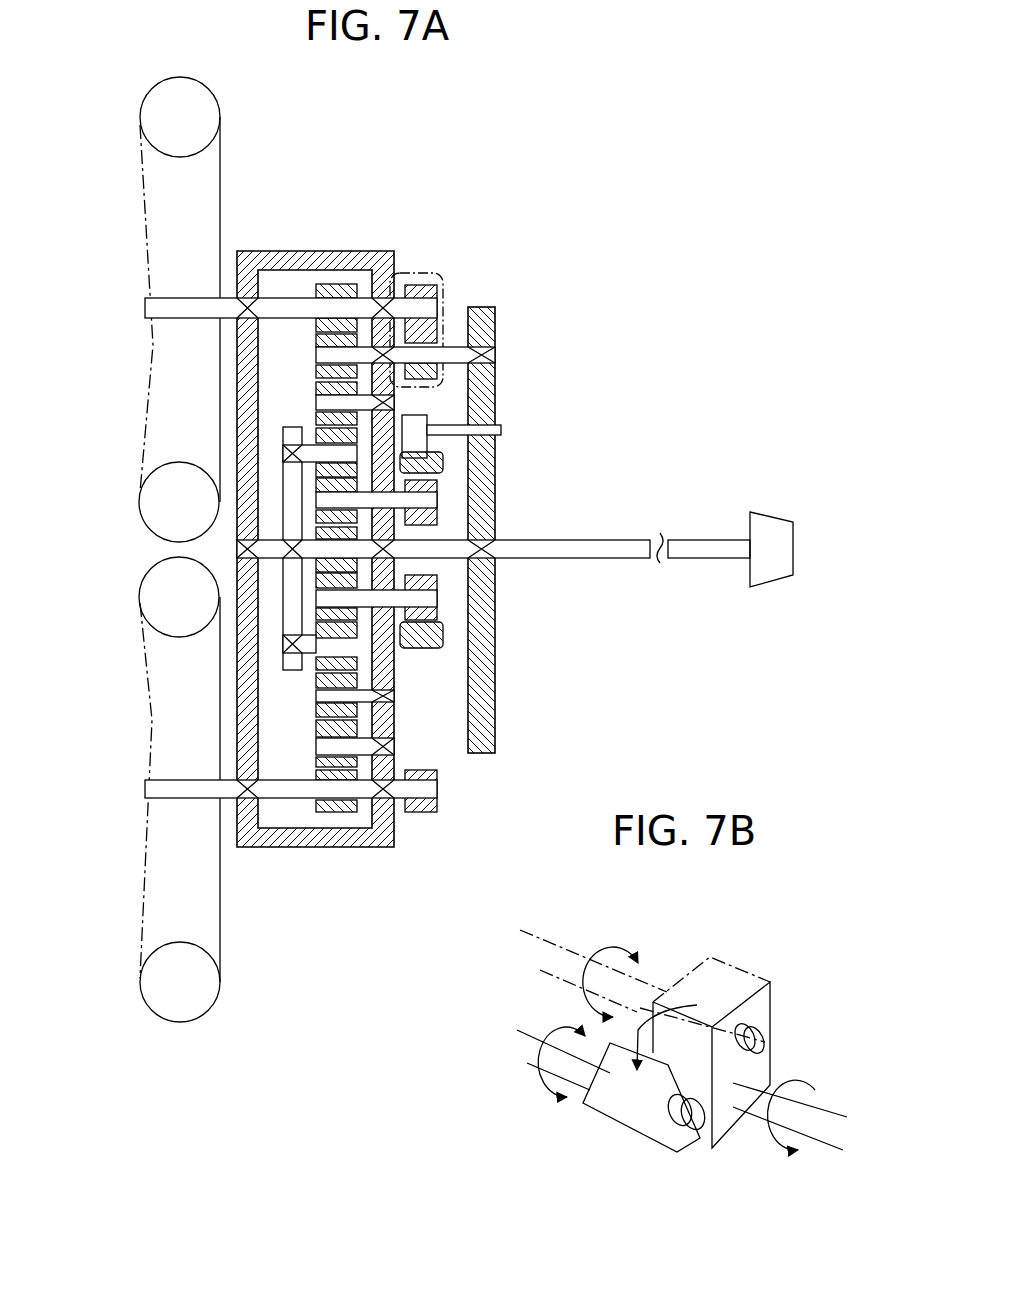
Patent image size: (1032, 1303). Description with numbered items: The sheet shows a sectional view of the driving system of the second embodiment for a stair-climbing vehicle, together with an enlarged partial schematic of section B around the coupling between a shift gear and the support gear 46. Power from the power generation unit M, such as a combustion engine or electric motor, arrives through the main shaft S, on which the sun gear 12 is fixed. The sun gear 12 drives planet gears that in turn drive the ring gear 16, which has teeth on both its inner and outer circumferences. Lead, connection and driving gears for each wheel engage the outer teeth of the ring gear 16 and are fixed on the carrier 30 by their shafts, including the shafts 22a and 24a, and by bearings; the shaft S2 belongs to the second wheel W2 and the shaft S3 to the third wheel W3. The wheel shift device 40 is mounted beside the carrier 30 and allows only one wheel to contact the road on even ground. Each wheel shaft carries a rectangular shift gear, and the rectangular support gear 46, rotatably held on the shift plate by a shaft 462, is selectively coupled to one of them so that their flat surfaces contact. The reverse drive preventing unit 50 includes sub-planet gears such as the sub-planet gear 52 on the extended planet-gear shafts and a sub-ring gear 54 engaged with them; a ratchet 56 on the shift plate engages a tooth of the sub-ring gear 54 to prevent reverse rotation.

In FIG. 7A, the second wheel W2 is at (160, 172).
In FIG. 7A, the third wheel W3 is at (158, 652).
In FIG. 7A, the carrier 30 is at (284, 246).
In FIG. 7A, the wheel shift device 40 is at (491, 305).
In FIG. 7A, the ring gear 16 is at (290, 486).
In FIG. 7A, the support gear 46 is at (443, 362).
In FIG. 7B, the support gear 46 is at (730, 1127).
In FIG. 7A, the ratchet 56 is at (413, 416).
In FIG. 7A, the reverse drive preventing unit 50 is at (449, 417).
In FIG. 7A, the sub-ring gear 54 is at (440, 453).
In FIG. 7A, the sub-planet gear 52 is at (440, 513).
In FIG. 7A, the shaft S2 is at (145, 307).
In FIG. 7B, the shaft S2 is at (560, 960).
In FIG. 7A, the shaft S3 is at (145, 789).
In FIG. 7A, the shaft 462 is at (449, 352).
In FIG. 7B, the shaft 462 is at (825, 1137).
In FIG. 7A, the sun gear 12 is at (237, 560).
In FIG. 7A, the main shaft S is at (622, 540).
In FIG. 7A, the power generation unit M is at (770, 520).
In FIG. 7A, the shaft 22a is at (363, 357).
In FIG. 7A, the shaft 24a is at (386, 345).
In FIG. 7A, the bearing B is at (244, 807).